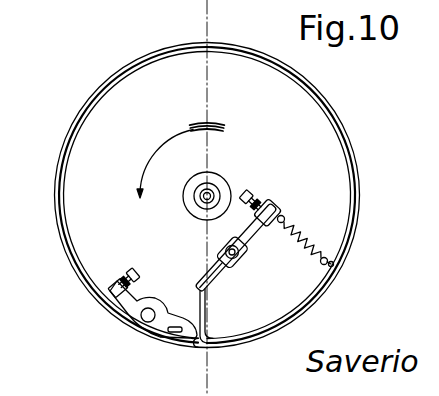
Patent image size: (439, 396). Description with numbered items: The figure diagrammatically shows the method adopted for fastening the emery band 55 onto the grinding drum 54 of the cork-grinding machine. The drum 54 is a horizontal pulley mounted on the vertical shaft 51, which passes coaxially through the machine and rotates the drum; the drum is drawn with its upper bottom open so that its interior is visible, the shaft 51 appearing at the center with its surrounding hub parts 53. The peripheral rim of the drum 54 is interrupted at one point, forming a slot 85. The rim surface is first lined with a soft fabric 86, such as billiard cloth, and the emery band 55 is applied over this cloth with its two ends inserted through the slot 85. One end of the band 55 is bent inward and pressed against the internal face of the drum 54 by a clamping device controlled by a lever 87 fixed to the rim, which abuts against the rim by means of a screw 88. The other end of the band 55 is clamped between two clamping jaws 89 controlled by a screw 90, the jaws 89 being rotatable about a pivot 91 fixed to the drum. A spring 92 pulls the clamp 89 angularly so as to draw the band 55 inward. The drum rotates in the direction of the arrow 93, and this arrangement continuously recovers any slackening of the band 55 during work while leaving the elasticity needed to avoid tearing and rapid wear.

The vertical shaft 51 is at (188, 204).
The shaft 53 is at (221, 182).
The horizontal pulley or drum 54 is at (252, 61).
The emery band 55 is at (350, 140).
The slot 85 is at (210, 348).
The soft fabric 86 is at (353, 235).
The lever 87 is at (167, 318).
The screw 88 is at (141, 272).
The clamping jaws 89 is at (224, 272).
The screw 90 is at (254, 199).
The pivot 91 is at (239, 253).
The spring 92 is at (303, 238).
The arrow 93 is at (165, 164).